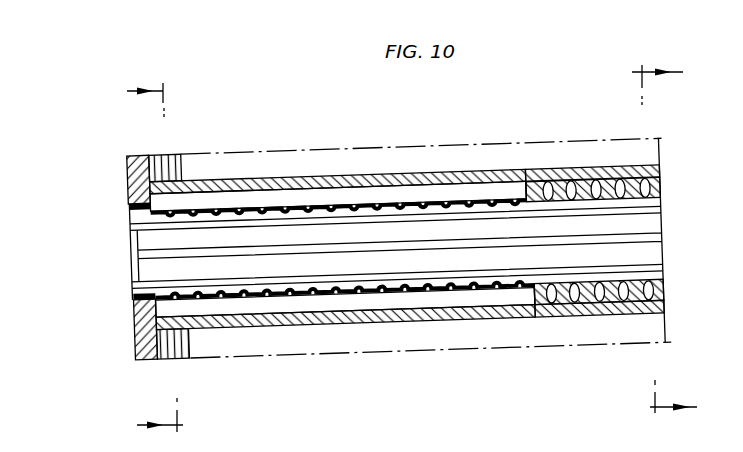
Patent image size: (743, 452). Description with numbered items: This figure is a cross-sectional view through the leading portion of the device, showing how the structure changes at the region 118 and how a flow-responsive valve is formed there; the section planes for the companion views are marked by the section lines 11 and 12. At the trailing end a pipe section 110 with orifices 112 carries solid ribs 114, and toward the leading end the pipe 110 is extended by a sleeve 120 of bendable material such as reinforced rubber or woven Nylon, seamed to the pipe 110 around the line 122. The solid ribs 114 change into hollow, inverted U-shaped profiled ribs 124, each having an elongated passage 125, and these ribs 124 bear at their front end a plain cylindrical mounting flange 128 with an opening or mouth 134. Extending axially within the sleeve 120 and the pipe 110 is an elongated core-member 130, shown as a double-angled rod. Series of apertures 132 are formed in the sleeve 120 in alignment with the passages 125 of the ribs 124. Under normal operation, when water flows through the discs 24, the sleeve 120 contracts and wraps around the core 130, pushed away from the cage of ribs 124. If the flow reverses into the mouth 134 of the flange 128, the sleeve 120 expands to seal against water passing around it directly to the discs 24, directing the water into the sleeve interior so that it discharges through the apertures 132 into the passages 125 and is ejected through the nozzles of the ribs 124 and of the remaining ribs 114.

The section line 11- 11 is at (674, 241).
The section line 12- 12 is at (138, 262).
The discs 24 is at (181, 160).
The pipe section 110 is at (660, 190).
The orifices 112 is at (650, 193).
The ribs 114 is at (558, 172).
The region 118 is at (522, 134).
The sleeve 120 is at (131, 223).
The line 122 is at (530, 208).
The hollow inverted U-shaped profiled ribs 124 is at (283, 182).
The elongated passage 125 is at (362, 190).
The mounting flange 128 is at (138, 335).
The core-member 130 is at (150, 240).
The apertures 132 is at (368, 210).
The opening or mouth 134 is at (135, 211).